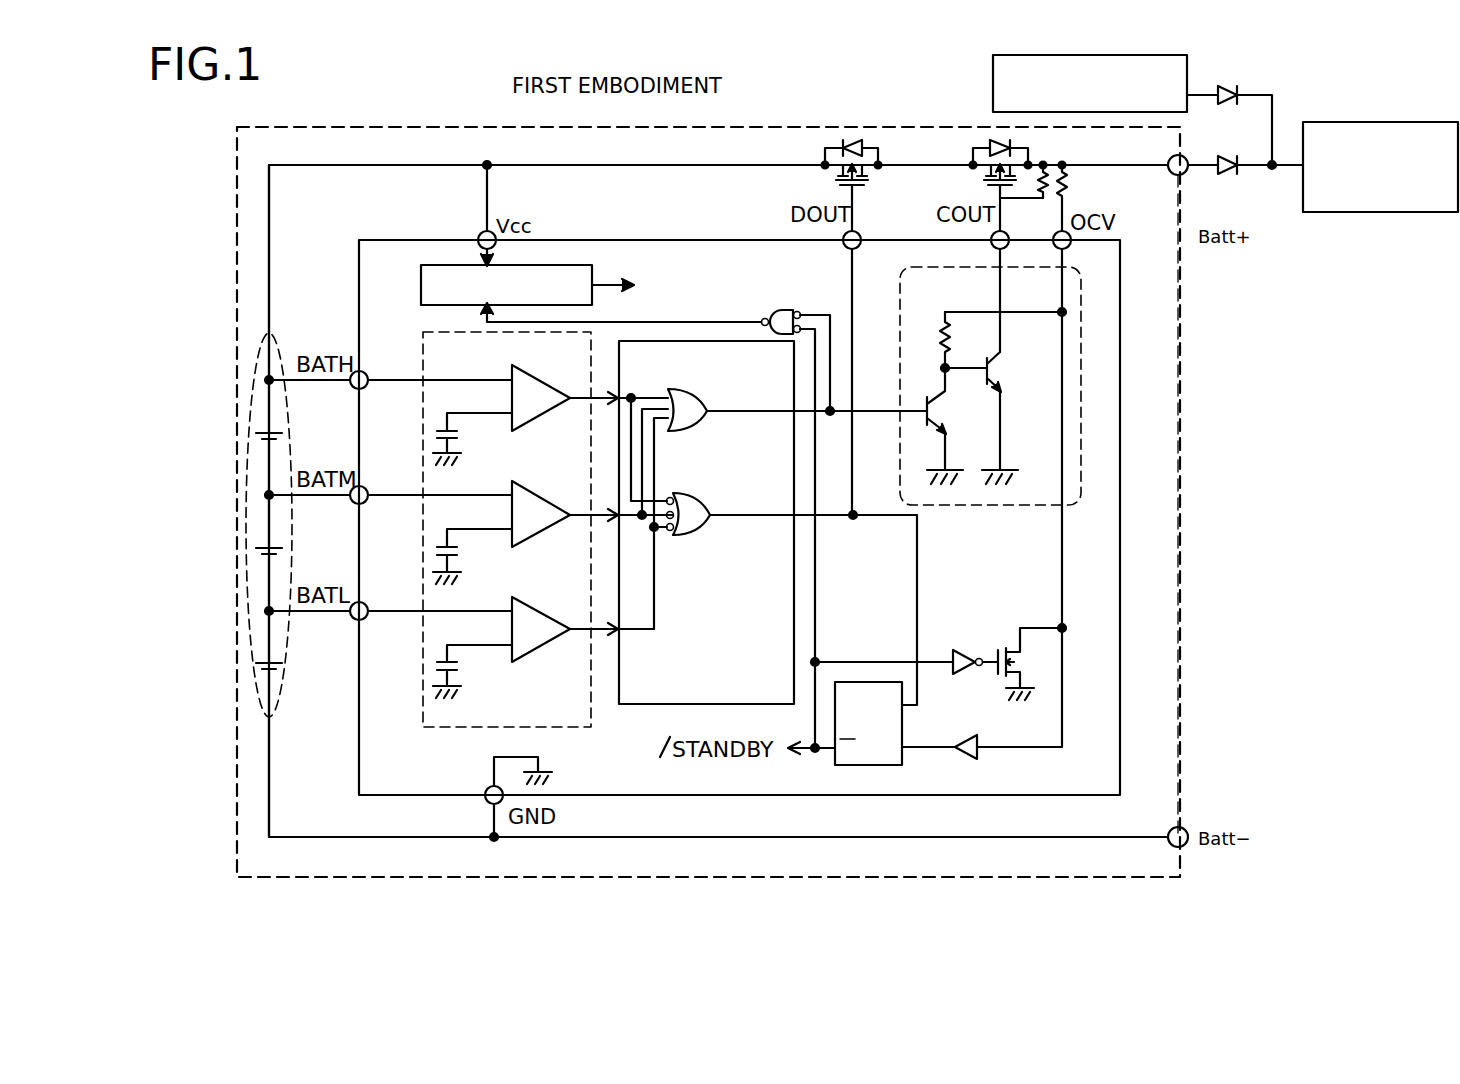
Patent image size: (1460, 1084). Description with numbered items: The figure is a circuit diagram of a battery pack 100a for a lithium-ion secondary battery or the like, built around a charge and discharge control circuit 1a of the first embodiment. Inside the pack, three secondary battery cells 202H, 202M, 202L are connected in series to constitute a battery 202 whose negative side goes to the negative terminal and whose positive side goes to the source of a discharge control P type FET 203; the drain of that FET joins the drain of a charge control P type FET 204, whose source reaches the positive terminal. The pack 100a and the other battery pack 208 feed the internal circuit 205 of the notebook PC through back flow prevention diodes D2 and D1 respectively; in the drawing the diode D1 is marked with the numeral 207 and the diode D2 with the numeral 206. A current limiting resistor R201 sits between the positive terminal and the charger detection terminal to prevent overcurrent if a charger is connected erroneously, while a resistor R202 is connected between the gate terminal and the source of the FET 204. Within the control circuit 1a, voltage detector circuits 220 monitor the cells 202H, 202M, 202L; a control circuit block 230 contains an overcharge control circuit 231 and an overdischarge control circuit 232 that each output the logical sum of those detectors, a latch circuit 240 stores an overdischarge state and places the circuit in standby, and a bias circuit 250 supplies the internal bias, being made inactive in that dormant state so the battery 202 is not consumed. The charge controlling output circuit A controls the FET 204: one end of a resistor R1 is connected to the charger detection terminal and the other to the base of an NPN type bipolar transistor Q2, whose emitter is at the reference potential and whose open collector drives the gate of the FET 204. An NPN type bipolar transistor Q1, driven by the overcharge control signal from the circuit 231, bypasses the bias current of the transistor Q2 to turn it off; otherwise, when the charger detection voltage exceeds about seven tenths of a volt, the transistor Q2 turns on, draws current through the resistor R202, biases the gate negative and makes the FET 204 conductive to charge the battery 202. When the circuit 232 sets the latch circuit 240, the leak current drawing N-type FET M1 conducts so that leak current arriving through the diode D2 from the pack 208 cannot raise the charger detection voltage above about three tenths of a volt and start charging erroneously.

The battery pack 100a is at (480, 120).
The charge and discharge control circuit 1a is at (1140, 382).
The battery 202 is at (222, 501).
The secondary battery cell 202H is at (256, 437).
The secondary battery cell 202M is at (256, 549).
The secondary battery cell 202L is at (256, 664).
The discharge control P type FET 203 is at (840, 138).
The charge control P type FET 204 is at (990, 138).
The internal circuit of the notebook PC 205 is at (1392, 122).
The diode D2 206 is at (1245, 191).
The diode D1 207 is at (1245, 110).
The other battery pack 208 is at (1118, 56).
The voltage detector circuit 220 is at (558, 728).
The control circuit 230 is at (772, 582).
The overcharge control circuit 231 is at (700, 392).
The overdischarge control circuit 232 is at (703, 499).
The latch circuit 240 is at (905, 766).
The bias circuit 250 is at (574, 277).
The charge controlling output circuit A is at (1027, 386).
The resistor R1 is at (932, 340).
The NPN type bipolar transistor Q1 is at (951, 426).
The NPN type bipolar transistor Q2 is at (986, 418).
The leak current drawing N-type FET M1 is at (1022, 664).
The current limiting resistor R201 is at (1089, 197).
The resistor R202 is at (1066, 167).
The back flow prevention diode D1 is at (1207, 73).
The back flow prevention diode D2 is at (1220, 186).